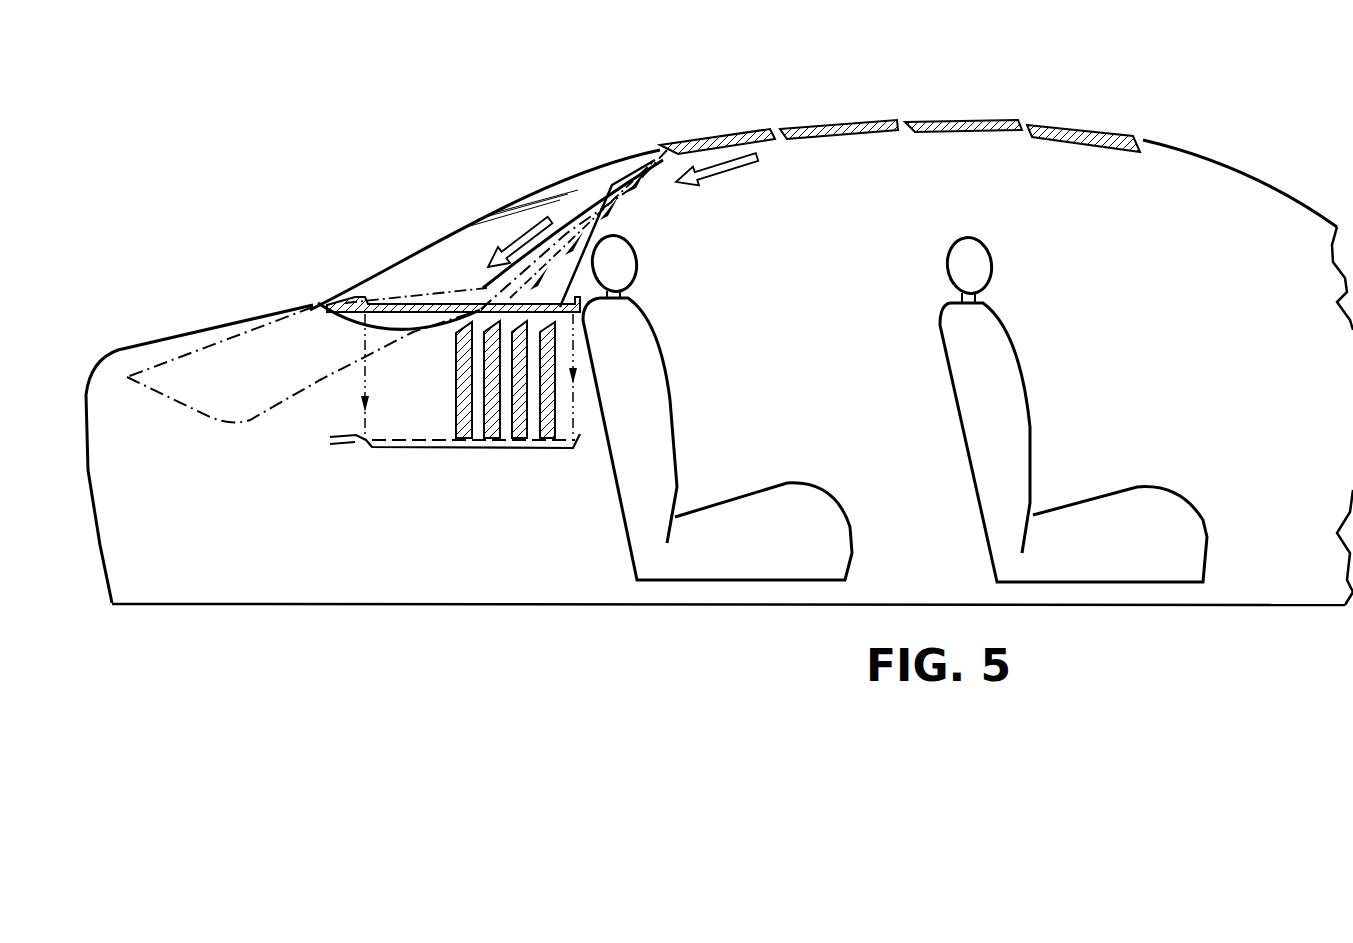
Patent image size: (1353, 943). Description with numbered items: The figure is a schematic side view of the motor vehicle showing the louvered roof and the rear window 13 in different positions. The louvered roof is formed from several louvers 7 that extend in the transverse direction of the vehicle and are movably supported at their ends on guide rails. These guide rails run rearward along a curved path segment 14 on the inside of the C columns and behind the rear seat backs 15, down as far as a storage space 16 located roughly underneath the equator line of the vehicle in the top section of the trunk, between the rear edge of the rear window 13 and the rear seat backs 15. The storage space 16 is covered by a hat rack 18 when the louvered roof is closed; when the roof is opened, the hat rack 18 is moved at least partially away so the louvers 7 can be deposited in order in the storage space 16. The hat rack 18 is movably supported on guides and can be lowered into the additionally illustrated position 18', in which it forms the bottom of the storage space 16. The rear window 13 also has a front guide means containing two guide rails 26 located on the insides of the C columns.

The louvers 7 is at (728, 140).
The rear window 13 is at (218, 355).
The curved path segment 14 is at (603, 200).
The rear seat backs 15 is at (638, 393).
The storage space 16 is at (423, 393).
The hat rack 18 is at (453, 242).
The lowered position of the hat rack 18' is at (455, 482).
The guide rails 26 is at (640, 193).